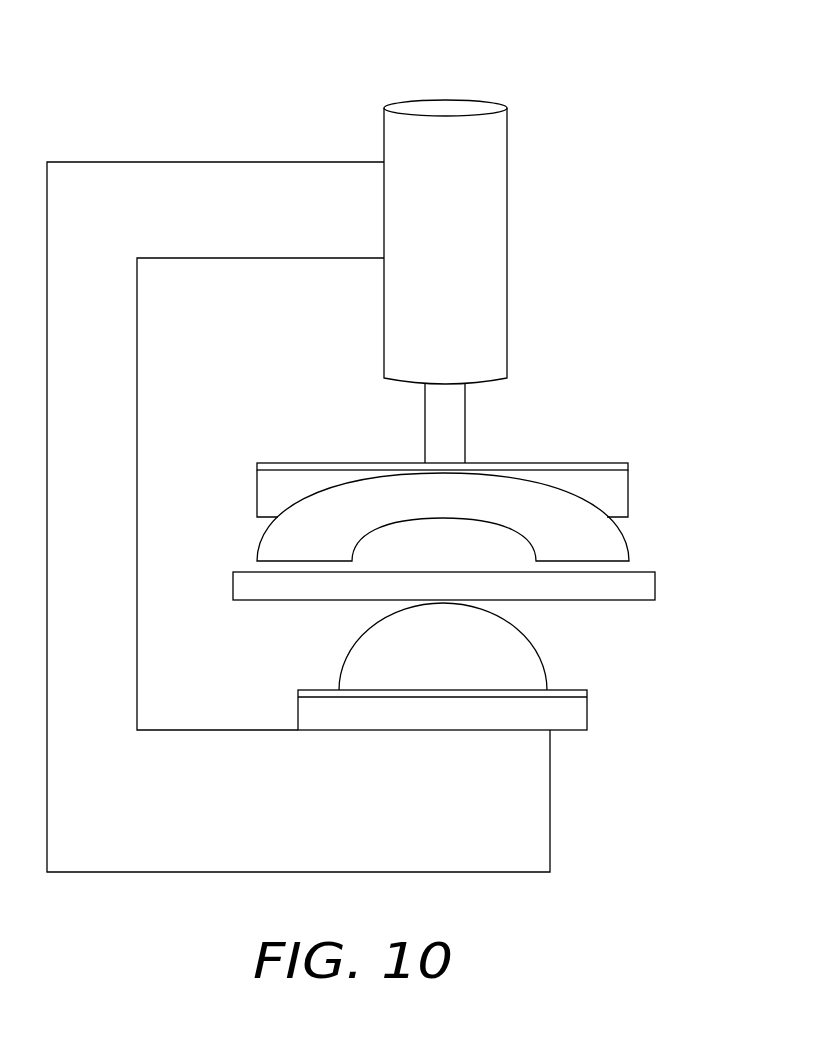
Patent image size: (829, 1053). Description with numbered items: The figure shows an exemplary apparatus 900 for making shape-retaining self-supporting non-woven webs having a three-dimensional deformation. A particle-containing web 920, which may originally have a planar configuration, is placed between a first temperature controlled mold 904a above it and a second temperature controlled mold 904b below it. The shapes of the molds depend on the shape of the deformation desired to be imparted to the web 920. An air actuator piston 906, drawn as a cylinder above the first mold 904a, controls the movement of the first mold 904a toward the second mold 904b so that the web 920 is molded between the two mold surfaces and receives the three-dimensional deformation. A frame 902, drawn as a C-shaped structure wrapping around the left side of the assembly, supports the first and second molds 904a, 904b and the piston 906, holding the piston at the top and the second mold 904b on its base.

The apparatus 900 is at (145, 68).
The frame 902 is at (548, 810).
The air actuator piston 906 is at (490, 258).
The first temperature controlled mold 904a is at (603, 462).
The particle-containing web 920 is at (657, 585).
The second temperature controlled mold 904b is at (580, 690).